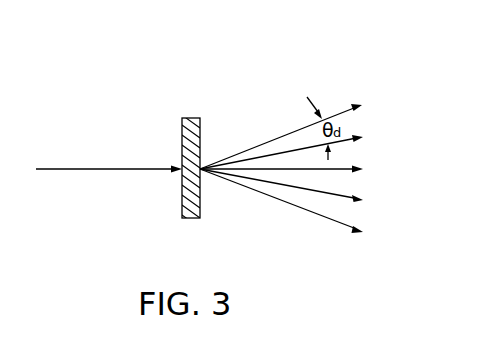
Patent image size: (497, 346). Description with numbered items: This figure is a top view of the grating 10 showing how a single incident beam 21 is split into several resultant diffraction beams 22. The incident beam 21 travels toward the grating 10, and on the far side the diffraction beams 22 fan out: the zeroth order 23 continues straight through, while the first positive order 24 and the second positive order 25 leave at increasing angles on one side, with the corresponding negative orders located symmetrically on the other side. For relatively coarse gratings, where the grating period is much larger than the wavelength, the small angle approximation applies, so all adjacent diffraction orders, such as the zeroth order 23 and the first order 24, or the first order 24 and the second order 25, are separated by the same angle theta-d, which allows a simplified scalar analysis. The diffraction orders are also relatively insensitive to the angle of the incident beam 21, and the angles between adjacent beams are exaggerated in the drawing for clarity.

The grating 10 is at (197, 117).
The incident beam 21 is at (98, 168).
The diffraction beams 22 is at (272, 85).
The 0th order 23 is at (339, 168).
The +1st order 24 is at (362, 137).
The +2nd order 25 is at (342, 110).